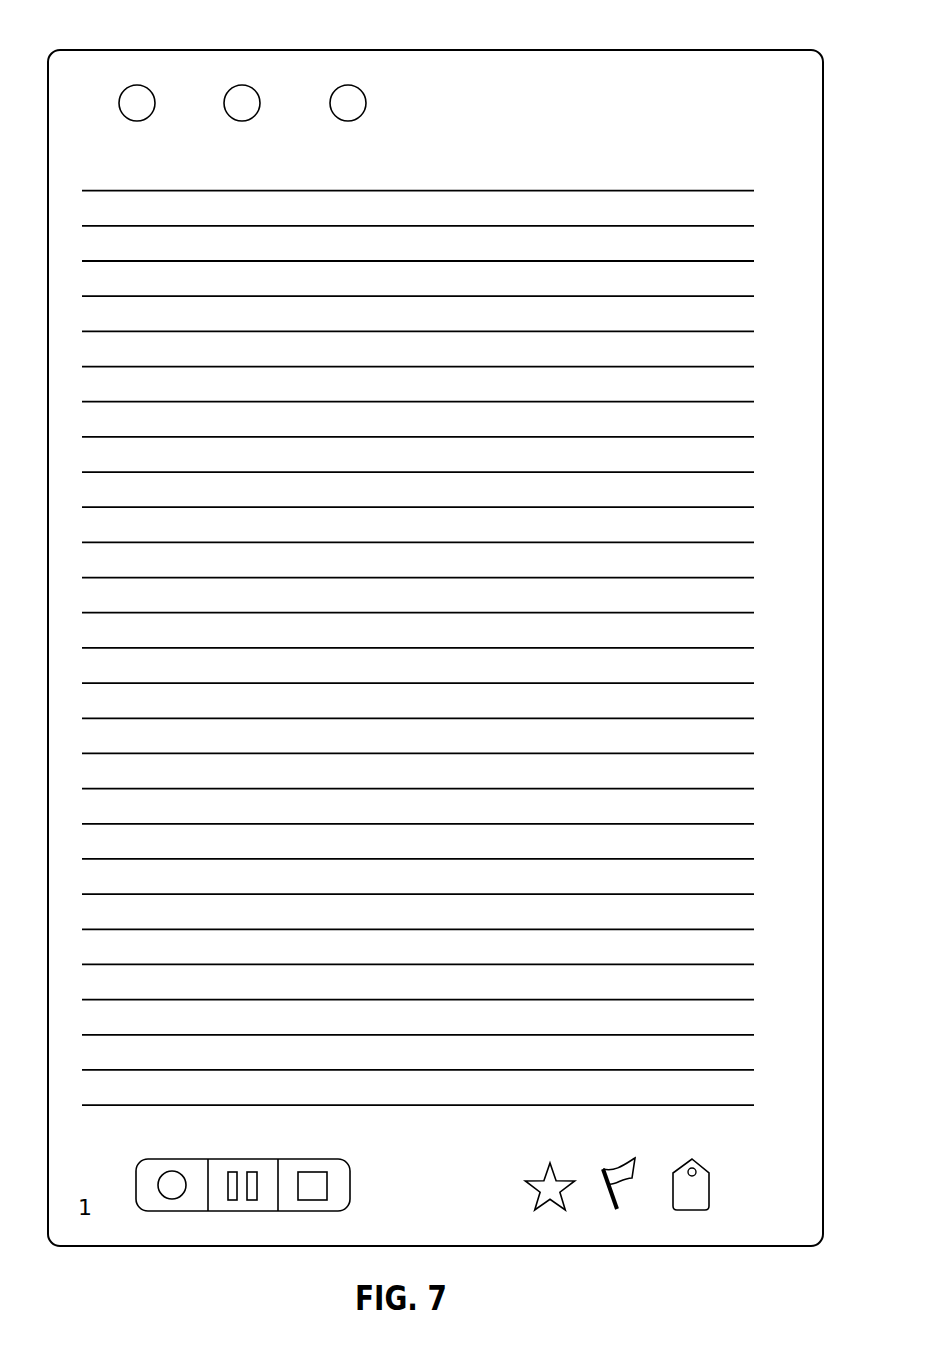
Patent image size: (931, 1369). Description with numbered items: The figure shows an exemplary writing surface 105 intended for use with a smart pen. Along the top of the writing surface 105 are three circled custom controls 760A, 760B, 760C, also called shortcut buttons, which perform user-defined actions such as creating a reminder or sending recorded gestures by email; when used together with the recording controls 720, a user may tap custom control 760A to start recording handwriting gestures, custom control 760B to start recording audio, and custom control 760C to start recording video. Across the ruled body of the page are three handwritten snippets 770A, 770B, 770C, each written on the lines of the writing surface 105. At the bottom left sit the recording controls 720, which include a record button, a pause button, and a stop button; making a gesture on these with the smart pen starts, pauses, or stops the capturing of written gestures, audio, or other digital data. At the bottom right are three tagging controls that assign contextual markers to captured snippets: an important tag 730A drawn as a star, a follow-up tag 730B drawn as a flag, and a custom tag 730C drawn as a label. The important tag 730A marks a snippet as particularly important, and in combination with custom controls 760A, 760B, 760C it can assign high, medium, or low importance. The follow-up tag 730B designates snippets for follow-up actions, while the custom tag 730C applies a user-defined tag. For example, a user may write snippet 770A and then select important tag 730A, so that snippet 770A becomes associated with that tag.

The writing surface 105 is at (762, 28).
The custom control 760A is at (137, 121).
The custom control 760B is at (241, 85).
The custom control 760C is at (348, 121).
The snippet 770A is at (662, 312).
The snippet 770B is at (663, 485).
The snippet 770C is at (679, 662).
The recording controls 720 is at (242, 1159).
The important tag 730A is at (550, 1162).
The follow-up tag 730B is at (619, 1211).
The custom tag 730C is at (692, 1158).